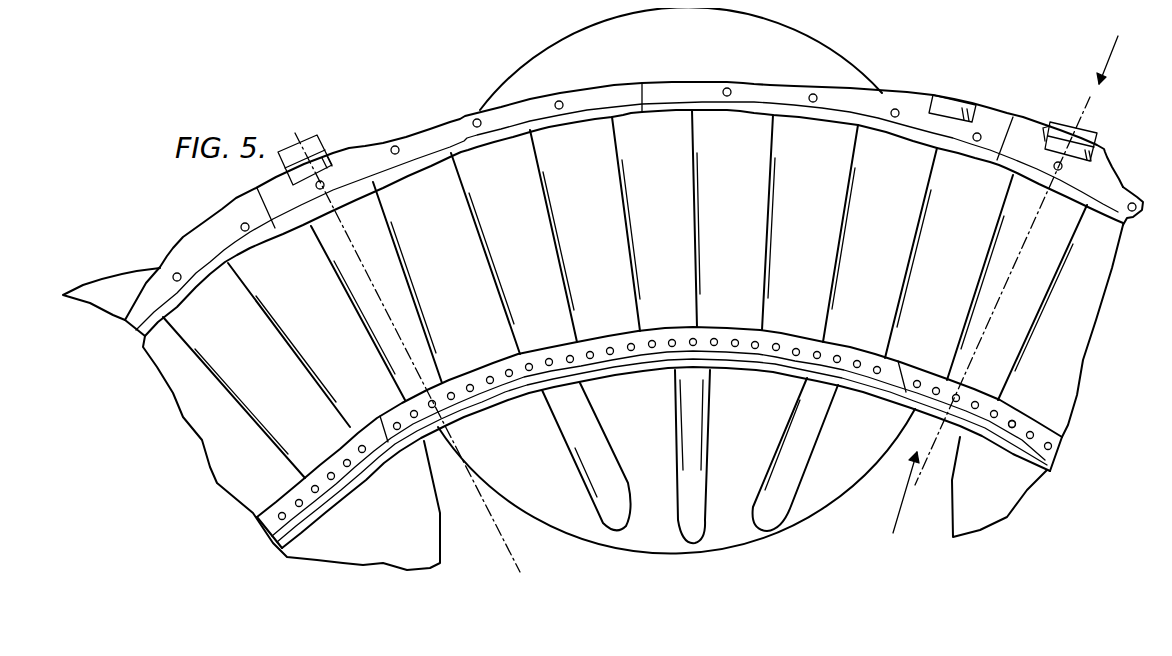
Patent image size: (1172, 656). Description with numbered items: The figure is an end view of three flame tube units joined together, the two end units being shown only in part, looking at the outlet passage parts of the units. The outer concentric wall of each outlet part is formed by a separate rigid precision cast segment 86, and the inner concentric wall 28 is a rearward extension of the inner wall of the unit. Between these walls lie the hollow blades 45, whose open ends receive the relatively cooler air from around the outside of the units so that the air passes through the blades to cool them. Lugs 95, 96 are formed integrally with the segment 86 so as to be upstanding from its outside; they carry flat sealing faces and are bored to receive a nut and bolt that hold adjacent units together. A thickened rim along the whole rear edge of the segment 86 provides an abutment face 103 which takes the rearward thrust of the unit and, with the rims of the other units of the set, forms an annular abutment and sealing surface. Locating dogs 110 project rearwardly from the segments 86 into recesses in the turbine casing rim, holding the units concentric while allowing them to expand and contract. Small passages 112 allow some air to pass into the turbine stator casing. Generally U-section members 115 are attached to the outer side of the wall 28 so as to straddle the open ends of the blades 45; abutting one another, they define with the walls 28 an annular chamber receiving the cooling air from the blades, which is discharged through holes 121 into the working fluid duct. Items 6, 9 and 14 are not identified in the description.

The section line 6- 6 is at (1102, 60).
The view direction arrow 9 is at (900, 492).
The casing 14 is at (442, 527).
The inner concentric wall 28 is at (1053, 468).
The blades 45 is at (895, 228).
The segment 86 is at (1114, 166).
The lug 95 is at (1082, 128).
The lug 96 is at (1058, 118).
The abutment face 103 is at (1095, 204).
The locating dog 110 is at (340, 140).
The small passage 112 is at (397, 146).
The U-section member 115 is at (770, 354).
The hole 121 is at (1012, 452).